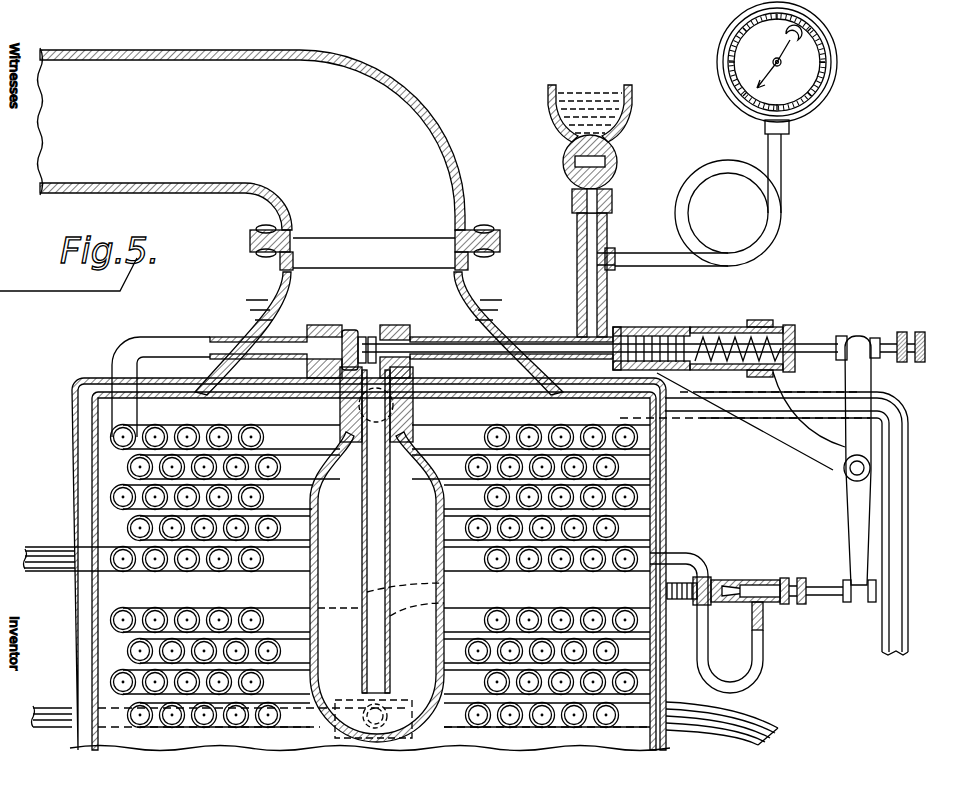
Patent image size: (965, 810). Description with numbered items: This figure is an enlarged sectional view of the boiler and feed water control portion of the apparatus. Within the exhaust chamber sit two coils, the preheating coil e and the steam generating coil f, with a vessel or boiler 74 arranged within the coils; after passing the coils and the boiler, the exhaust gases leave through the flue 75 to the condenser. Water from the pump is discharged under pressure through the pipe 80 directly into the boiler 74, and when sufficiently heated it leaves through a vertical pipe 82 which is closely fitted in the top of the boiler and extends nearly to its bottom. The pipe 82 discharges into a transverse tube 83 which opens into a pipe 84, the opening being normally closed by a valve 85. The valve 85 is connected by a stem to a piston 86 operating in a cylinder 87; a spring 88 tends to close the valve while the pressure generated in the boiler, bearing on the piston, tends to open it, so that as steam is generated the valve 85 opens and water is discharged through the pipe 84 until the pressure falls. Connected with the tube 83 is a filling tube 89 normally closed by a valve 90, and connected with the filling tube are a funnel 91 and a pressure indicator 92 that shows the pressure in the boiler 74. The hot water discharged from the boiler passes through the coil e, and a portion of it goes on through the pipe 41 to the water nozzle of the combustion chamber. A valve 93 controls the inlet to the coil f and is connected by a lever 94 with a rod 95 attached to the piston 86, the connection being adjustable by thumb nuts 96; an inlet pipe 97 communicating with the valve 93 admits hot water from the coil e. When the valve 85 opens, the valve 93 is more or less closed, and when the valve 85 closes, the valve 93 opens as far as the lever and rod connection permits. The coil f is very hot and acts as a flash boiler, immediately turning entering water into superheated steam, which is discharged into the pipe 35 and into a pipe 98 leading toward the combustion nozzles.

The flue 75 is at (269, 159).
The funnel 91 is at (548, 103).
The valve 90 is at (563, 163).
The filling tube 89 is at (590, 227).
The pressure indicator 92 is at (831, 80).
The pipe 84 is at (288, 332).
The valve 85 is at (366, 340).
The transverse tube 83 is at (445, 337).
The piston 86 is at (655, 328).
The cylinder 87 is at (733, 328).
The spring 88 is at (786, 326).
The rod 95 is at (822, 343).
The thumb nuts 96 is at (907, 333).
The pipe 80 is at (905, 510).
The lever 94 is at (847, 503).
The valve 93 is at (760, 580).
The inlet pipe 97 is at (764, 645).
The pipe 35 is at (772, 732).
The vertical pipe 82 is at (390, 557).
The boiler 74 is at (377, 554).
The pipe 41 is at (35, 549).
The pipe 98 is at (54, 727).
The preheating coils e is at (130, 465).
The steam generating coils f is at (125, 678).